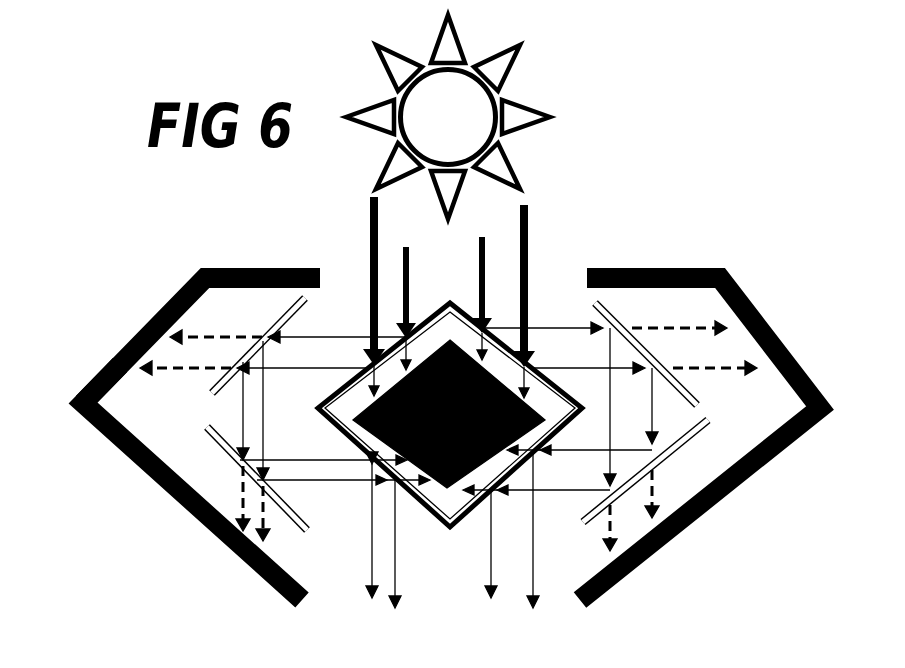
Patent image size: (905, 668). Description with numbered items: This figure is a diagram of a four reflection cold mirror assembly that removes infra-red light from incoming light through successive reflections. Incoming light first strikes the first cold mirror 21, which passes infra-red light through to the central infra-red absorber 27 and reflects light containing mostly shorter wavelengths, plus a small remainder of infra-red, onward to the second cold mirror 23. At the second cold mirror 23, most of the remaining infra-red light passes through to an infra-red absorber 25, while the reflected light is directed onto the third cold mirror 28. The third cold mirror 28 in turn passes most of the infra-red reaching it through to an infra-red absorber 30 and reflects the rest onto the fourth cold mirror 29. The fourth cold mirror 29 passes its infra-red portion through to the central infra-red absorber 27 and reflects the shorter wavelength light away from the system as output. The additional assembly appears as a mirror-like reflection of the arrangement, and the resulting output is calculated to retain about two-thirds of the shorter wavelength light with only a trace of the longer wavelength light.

The first cold mirror 21 is at (340, 383).
The second cold mirror 23 is at (275, 325).
The infra-red absorber 25 is at (172, 298).
The central infra-red absorber 27 is at (450, 340).
The third cold mirror 28 is at (224, 450).
The fourth cold mirror 29 is at (340, 437).
The infra-red absorber 30 is at (257, 573).